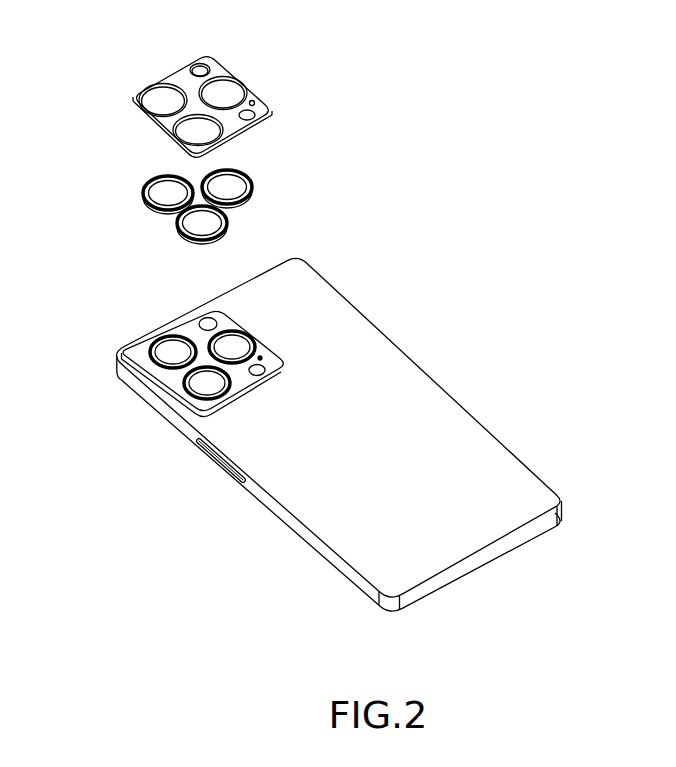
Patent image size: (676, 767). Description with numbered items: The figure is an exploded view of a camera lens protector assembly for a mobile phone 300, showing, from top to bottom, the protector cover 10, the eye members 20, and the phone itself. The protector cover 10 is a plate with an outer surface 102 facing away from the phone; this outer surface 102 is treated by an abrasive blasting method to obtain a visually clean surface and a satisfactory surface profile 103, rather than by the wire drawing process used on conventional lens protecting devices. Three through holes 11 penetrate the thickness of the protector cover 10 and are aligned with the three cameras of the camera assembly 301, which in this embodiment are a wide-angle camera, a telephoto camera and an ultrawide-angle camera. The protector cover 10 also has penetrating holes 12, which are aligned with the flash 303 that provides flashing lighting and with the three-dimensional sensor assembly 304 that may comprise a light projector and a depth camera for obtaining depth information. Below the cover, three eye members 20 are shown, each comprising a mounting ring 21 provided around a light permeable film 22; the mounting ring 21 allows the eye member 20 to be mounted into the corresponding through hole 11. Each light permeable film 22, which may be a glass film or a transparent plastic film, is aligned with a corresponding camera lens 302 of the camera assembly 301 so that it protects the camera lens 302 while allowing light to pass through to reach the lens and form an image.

The protector cover 10 is at (215, 71).
The through hole 11 is at (160, 95).
The penetrating hole 12 is at (195, 70).
The outer surface 102 is at (253, 99).
The surface profile 103 is at (227, 117).
The eye member 20 is at (257, 192).
The mounting ring 21 is at (247, 197).
The light permeable film 22 is at (229, 182).
The mobile phone 300 is at (412, 425).
The camera assembly 301 is at (262, 347).
The camera lens 302 is at (175, 350).
The flash 303 is at (204, 321).
The 3D sensor assembly 304 is at (255, 373).